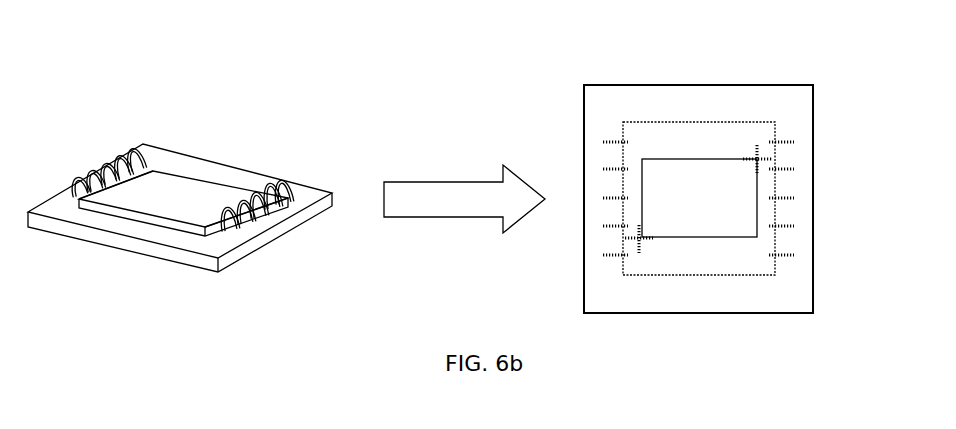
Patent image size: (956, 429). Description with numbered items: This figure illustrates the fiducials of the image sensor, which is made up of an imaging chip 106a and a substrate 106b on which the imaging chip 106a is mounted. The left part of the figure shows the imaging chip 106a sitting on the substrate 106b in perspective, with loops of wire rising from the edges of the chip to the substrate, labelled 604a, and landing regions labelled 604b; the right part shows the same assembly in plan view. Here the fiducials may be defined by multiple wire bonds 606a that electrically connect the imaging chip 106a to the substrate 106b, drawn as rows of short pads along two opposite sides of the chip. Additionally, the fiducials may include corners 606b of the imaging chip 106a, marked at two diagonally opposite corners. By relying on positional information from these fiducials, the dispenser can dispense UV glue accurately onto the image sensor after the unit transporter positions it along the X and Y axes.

The wire bond loops 604a is at (73, 182).
The bond pad edges 604b is at (238, 197).
The imaging chip 106a is at (153, 187).
The substrate 106b is at (183, 265).
The wire bonds 606a is at (602, 255).
The corners of the imaging chip 606b is at (752, 177).